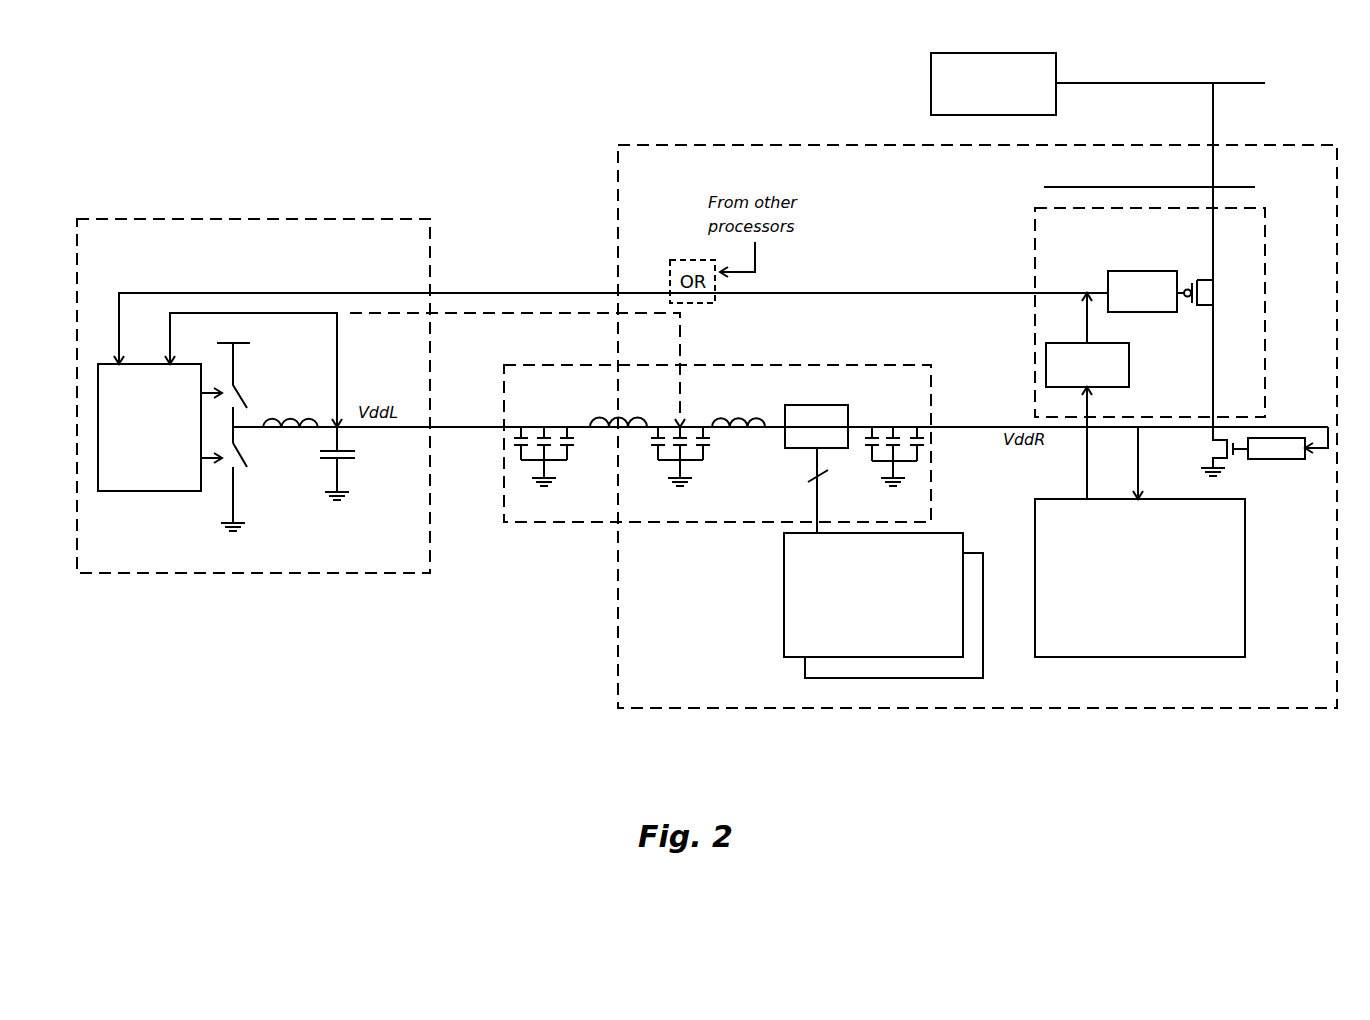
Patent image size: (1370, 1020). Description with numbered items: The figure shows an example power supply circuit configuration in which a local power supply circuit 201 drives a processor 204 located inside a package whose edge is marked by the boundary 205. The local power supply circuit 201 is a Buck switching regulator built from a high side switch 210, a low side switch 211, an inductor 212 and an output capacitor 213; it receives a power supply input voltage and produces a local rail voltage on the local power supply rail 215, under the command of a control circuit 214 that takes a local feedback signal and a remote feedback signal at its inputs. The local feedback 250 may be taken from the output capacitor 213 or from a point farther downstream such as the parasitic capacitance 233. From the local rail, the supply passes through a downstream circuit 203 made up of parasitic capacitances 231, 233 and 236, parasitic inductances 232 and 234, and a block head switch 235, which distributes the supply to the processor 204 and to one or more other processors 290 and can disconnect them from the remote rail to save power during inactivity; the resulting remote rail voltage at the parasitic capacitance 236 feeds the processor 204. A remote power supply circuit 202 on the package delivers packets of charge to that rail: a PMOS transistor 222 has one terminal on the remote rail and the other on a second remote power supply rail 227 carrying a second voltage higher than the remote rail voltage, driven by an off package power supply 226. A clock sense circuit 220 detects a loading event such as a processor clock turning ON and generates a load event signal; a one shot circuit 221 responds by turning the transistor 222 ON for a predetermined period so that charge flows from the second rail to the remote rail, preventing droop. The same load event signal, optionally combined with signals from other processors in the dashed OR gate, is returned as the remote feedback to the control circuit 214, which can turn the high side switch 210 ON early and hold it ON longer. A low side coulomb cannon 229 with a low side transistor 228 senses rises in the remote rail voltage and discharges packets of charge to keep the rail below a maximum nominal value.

The local power supply circuit 201 is at (430, 240).
The remote power supply circuit 202 is at (1265, 325).
The downstream circuit 203 is at (935, 388).
The processor 204 is at (1127, 627).
The boundary 205 is at (965, 201).
The high side switch 210 is at (995, 426).
The low side switch 211 is at (251, 492).
The inductor 212 is at (281, 412).
The output capacitor 213 is at (361, 481).
The control circuit 214 is at (128, 489).
The local power supply rail 215 is at (486, 426).
The sense circuit 220 is at (1107, 388).
The one shot circuit 221 is at (1133, 313).
The PMOS transistor 222 is at (1246, 302).
The off package power supply 226 is at (939, 112).
The second remote power supply rail 227 is at (1213, 157).
The low side transistor 228 is at (1167, 474).
The low side coulomb cannon 229 is at (1264, 460).
The parasitic capacitance 231 is at (472, 479).
The parasitic inductance 232 is at (584, 417).
The parasitic capacitance 233 is at (712, 488).
The parasitic inductance 234 is at (751, 467).
The block head switch 235 is at (842, 405).
The parasitic capacitance 236 is at (937, 469).
The local feedback 250 is at (500, 313).
The other processors 290 is at (860, 632).